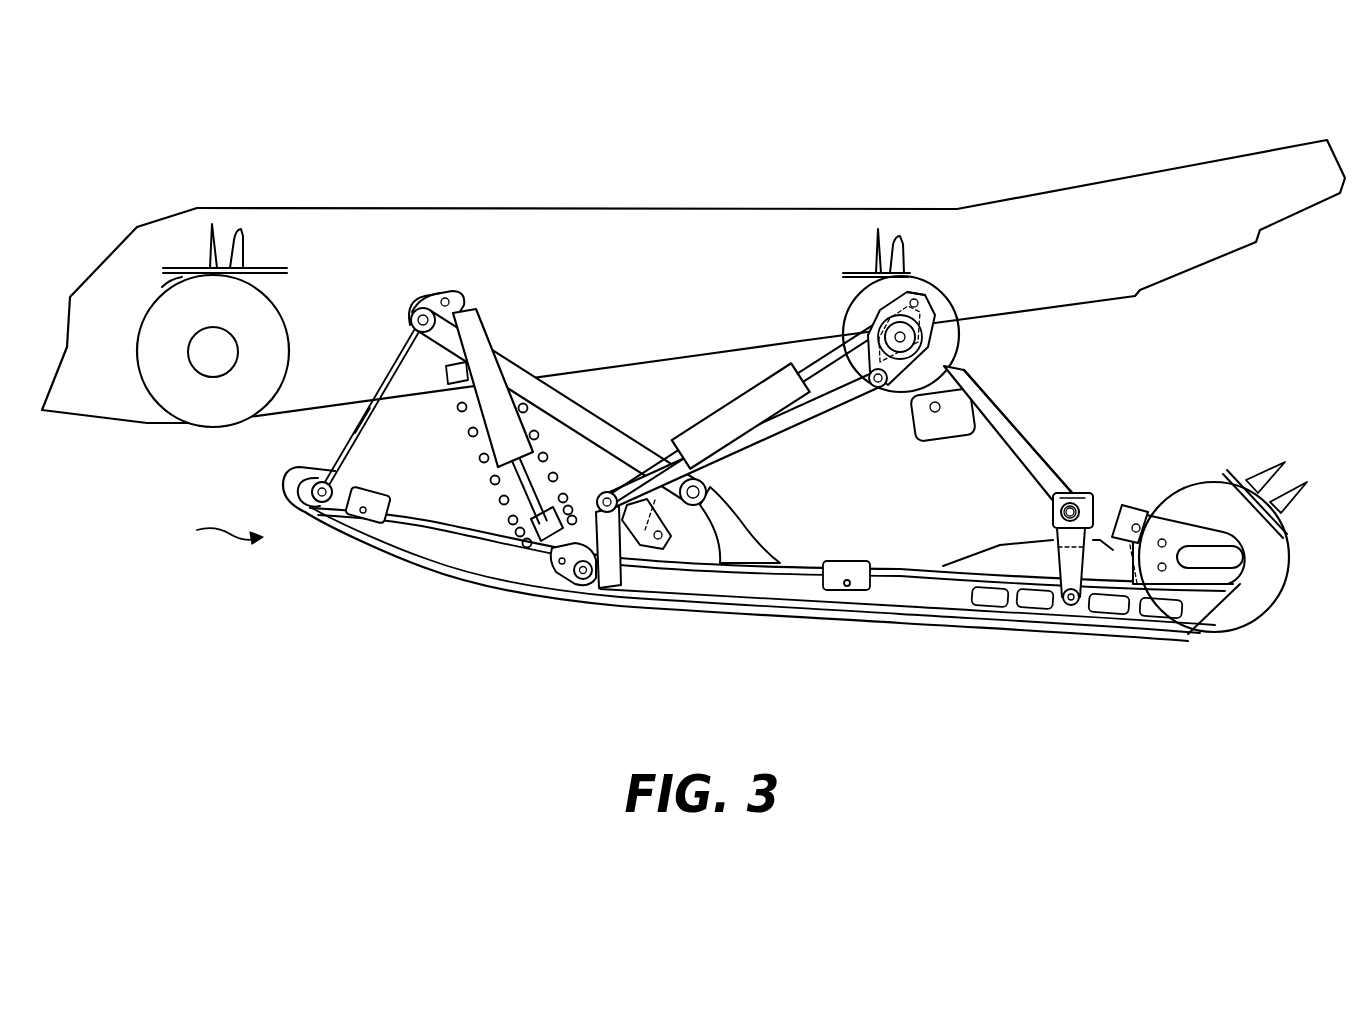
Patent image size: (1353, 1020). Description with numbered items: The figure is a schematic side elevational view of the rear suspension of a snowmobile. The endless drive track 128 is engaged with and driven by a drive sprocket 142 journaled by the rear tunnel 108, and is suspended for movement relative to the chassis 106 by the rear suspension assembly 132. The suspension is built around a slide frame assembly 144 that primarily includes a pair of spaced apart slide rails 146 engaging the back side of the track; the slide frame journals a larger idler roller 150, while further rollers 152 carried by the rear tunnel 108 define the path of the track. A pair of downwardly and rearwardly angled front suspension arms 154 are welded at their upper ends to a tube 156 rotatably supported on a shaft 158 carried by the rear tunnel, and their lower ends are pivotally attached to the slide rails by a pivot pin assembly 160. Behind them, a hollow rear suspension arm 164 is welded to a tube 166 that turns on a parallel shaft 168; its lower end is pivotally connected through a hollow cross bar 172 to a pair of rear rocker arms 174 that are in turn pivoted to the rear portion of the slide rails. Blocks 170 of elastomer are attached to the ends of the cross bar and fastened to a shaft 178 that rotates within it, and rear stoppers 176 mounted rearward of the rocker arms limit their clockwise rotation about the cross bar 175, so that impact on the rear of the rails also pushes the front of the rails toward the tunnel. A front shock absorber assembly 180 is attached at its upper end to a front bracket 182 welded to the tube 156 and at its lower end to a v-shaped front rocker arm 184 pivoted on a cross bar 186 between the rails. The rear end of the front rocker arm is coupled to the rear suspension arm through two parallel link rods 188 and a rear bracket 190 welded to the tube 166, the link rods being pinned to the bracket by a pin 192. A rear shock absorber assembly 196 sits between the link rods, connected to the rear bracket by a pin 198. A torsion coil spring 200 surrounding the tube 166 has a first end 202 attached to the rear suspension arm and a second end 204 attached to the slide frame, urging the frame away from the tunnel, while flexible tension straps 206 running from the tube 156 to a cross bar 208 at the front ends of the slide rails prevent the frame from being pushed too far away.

The chassis 106 is at (137, 227).
The rear tunnel 108 is at (628, 230).
The endless drive track 128 is at (1230, 468).
The rear suspension assembly 132 is at (206, 532).
The drive sprocket 142 is at (153, 402).
The slide frame assembly 144 is at (762, 540).
The slide rails 146 is at (692, 610).
The idler roller 150 is at (1263, 615).
The rollers 152 is at (962, 330).
The front suspension arms 154 is at (566, 398).
The tube 156 is at (410, 326).
The shaft 158 is at (410, 306).
The pivot pin assembly 160 is at (705, 505).
The rear suspension arm 164 is at (1020, 425).
The tube 166 is at (858, 330).
The shaft 168 is at (957, 362).
The blocks 170 is at (1100, 500).
The hollow cross bar 172 is at (1072, 494).
The rear rocker arms 174 is at (1060, 578).
The cross bar 175 is at (1074, 606).
The rear stoppers 176 is at (1112, 510).
The shaft 178 is at (1052, 508).
The front shock absorber assembly 180 is at (477, 452).
The front bracket 182 is at (417, 298).
The front rocker arm 184 is at (603, 590).
The cross bar 186 is at (558, 597).
The link rods 188 is at (691, 436).
The rear bracket 190 is at (847, 332).
The pin 192 is at (879, 390).
The rear shock absorber assembly 196 is at (743, 387).
The pin 198 is at (920, 284).
The torsion coil spring 200 is at (868, 328).
The first end 202 is at (978, 397).
The second end 204 is at (727, 467).
The flexible tension straps 206 is at (347, 423).
The cross bar 208 is at (293, 485).